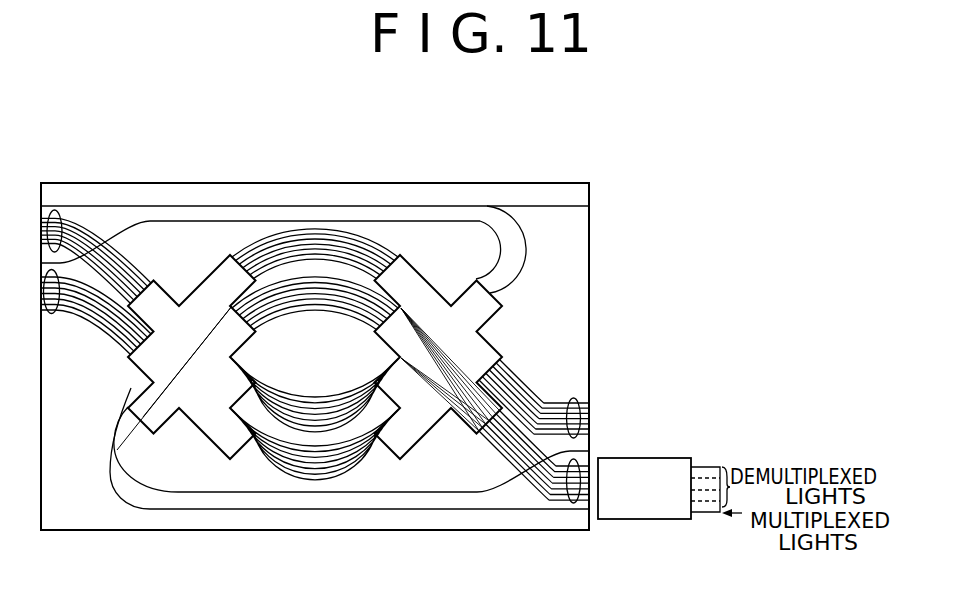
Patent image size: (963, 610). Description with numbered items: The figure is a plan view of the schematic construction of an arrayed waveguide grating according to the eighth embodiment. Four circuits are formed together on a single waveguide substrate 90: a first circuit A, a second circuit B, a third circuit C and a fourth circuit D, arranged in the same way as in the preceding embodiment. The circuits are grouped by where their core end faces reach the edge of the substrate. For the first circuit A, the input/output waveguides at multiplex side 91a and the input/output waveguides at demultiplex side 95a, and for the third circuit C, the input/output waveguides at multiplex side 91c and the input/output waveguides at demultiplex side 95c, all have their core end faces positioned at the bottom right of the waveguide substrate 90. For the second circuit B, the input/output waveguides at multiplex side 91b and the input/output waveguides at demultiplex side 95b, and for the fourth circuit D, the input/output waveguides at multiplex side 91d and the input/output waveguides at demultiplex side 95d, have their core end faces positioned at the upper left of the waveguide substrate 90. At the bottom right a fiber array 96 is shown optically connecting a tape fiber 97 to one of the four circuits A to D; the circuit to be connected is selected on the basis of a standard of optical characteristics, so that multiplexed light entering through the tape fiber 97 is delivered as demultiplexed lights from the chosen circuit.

The waveguide substrate 90 is at (520, 196).
The input/output waveguides at multiplex side 91a is at (540, 510).
The input/output waveguides at multiplex side 91b is at (203, 205).
The input/output waveguides at multiplex side 91c is at (590, 447).
The input/output waveguides at multiplex side 91d is at (68, 263).
The input/output waveguides at demultiplex side 95a is at (590, 458).
The input/output waveguides at demultiplex side 95b is at (58, 212).
The input/output waveguides at demultiplex side 95c is at (590, 398).
The input/output waveguides at demultiplex side 95d is at (86, 274).
The fiber array 96 is at (640, 520).
The tape fiber 97 is at (708, 466).
The first circuit A is at (341, 510).
The second circuit B is at (262, 205).
The third circuit C is at (416, 494).
The fourth circuit D is at (320, 220).